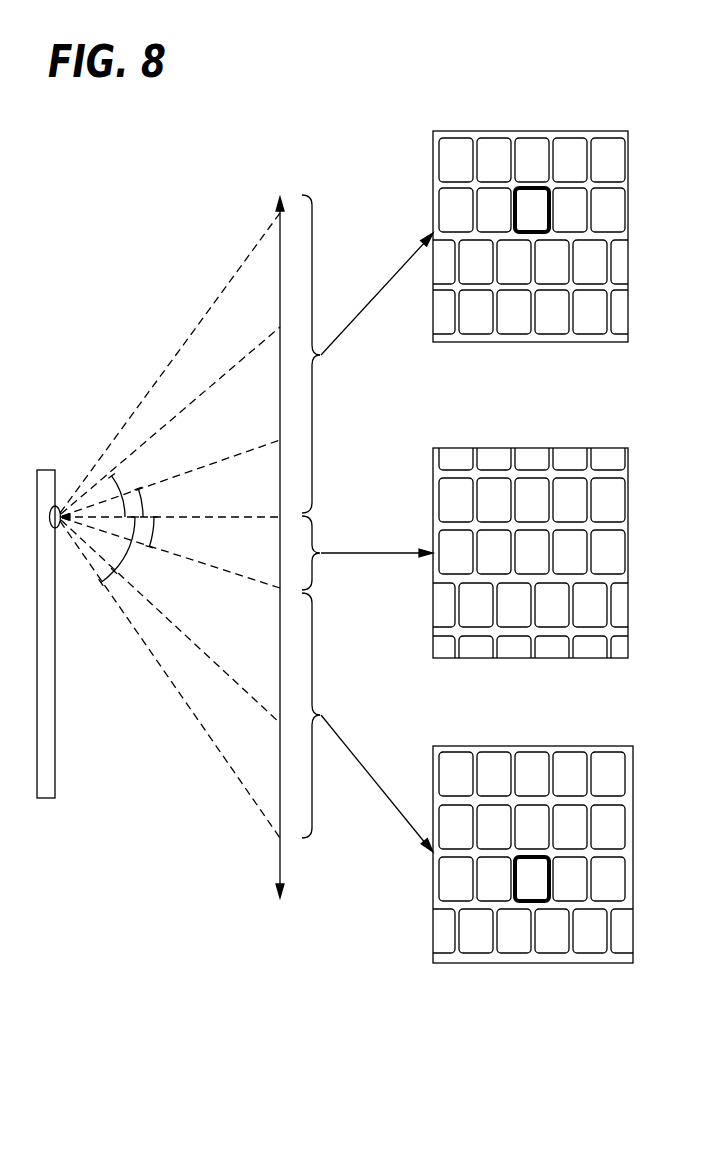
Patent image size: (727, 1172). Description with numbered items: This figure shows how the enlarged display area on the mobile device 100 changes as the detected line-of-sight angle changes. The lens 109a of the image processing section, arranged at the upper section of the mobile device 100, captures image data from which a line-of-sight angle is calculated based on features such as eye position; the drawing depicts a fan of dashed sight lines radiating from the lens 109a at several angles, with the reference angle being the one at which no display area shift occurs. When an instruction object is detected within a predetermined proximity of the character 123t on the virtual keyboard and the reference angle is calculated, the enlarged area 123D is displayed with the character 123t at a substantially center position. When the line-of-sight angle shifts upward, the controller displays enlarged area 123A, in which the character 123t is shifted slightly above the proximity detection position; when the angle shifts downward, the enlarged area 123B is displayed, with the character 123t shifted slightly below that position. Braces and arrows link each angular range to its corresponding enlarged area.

The mobile device 100 is at (55, 778).
The lens 109a is at (54, 505).
The enlarged area 123A is at (433, 160).
The enlarged area 123D is at (433, 498).
The enlarged area 123B is at (432, 940).
The character 123t is at (537, 197).